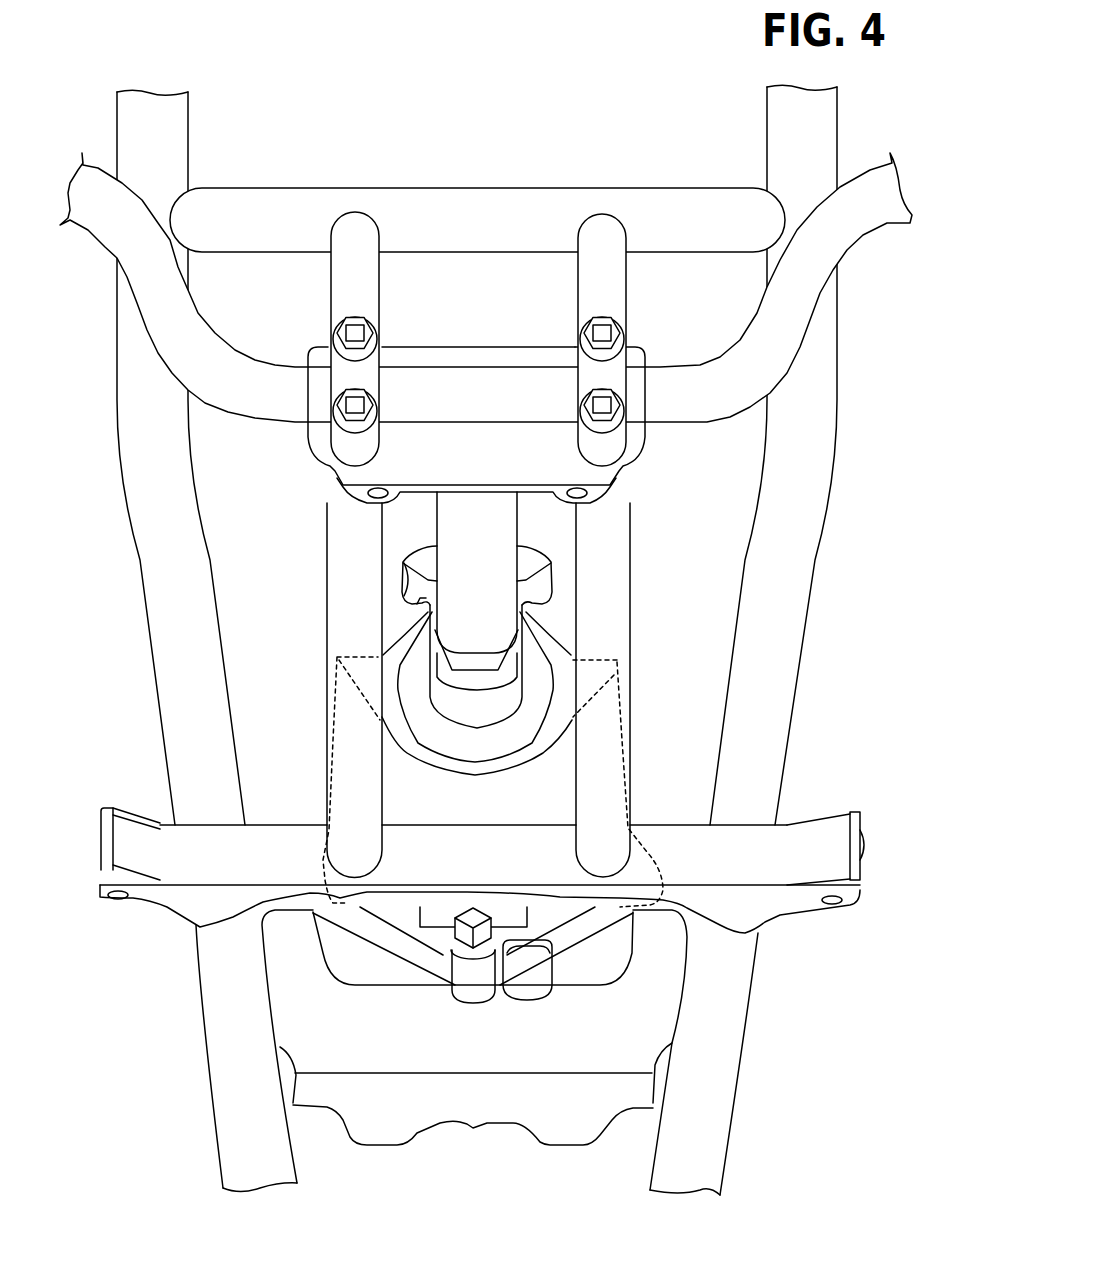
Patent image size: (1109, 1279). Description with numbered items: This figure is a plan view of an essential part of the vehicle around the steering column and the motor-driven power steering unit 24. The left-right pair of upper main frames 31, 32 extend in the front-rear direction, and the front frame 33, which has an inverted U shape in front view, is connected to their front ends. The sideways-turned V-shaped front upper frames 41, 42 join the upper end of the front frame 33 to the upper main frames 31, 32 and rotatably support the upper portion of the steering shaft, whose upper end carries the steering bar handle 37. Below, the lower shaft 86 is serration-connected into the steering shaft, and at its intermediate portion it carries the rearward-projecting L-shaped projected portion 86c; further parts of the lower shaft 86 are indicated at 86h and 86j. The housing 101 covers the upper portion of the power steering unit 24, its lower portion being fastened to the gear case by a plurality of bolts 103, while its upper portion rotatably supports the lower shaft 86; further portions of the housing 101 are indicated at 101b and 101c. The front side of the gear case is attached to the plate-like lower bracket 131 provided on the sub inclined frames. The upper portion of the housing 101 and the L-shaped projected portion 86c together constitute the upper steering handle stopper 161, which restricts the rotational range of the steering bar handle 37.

The motor-driven power steering unit 24 is at (553, 1003).
The upper main frame 31 is at (820, 412).
The upper main frame 32 is at (145, 482).
The front frame 33 is at (223, 1115).
The steering bar handle 37 is at (473, 387).
The front upper frame 41 is at (617, 513).
The front upper frame 42 is at (330, 500).
The lower shaft 86 is at (407, 558).
The L-shaped projected portion 86c is at (397, 580).
The right lug 86h is at (547, 585).
The lug lower end 86j is at (407, 597).
The housing 101 is at (472, 795).
The right hidden portion of lower bracket 101b is at (643, 783).
The left hidden portion of lower bracket 101c is at (332, 688).
The bolts 103 is at (450, 967).
The lower bracket 131 is at (467, 1113).
The upper steering handle stopper 161 is at (553, 620).